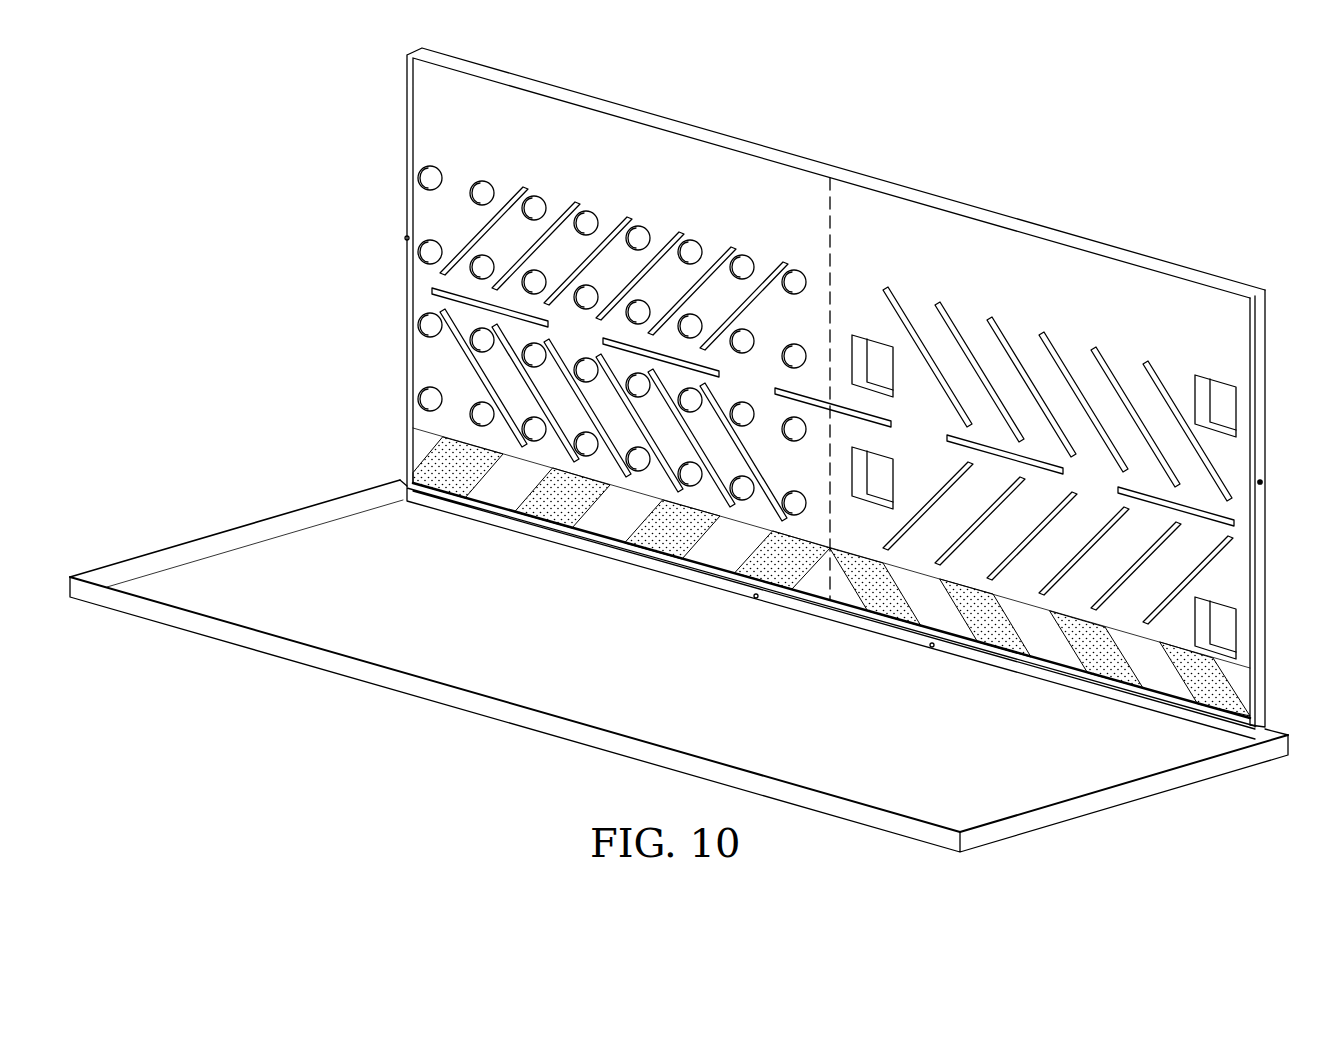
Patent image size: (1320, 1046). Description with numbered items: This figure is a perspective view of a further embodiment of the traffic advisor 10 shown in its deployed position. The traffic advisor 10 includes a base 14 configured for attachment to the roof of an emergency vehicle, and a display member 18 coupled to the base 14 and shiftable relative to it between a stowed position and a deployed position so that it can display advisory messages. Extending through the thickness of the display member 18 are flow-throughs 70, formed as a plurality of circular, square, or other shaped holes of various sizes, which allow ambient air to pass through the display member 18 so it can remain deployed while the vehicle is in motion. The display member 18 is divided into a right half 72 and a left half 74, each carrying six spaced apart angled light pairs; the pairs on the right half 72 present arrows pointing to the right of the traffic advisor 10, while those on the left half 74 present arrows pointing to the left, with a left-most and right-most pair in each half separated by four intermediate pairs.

The traffic advisor 10 is at (1025, 124).
The base 14 is at (1123, 797).
The display member 18 is at (1260, 563).
The flow-throughs 70 is at (398, 198).
The right half of the display member 72 is at (1069, 238).
The left half of the display member 74 is at (657, 117).